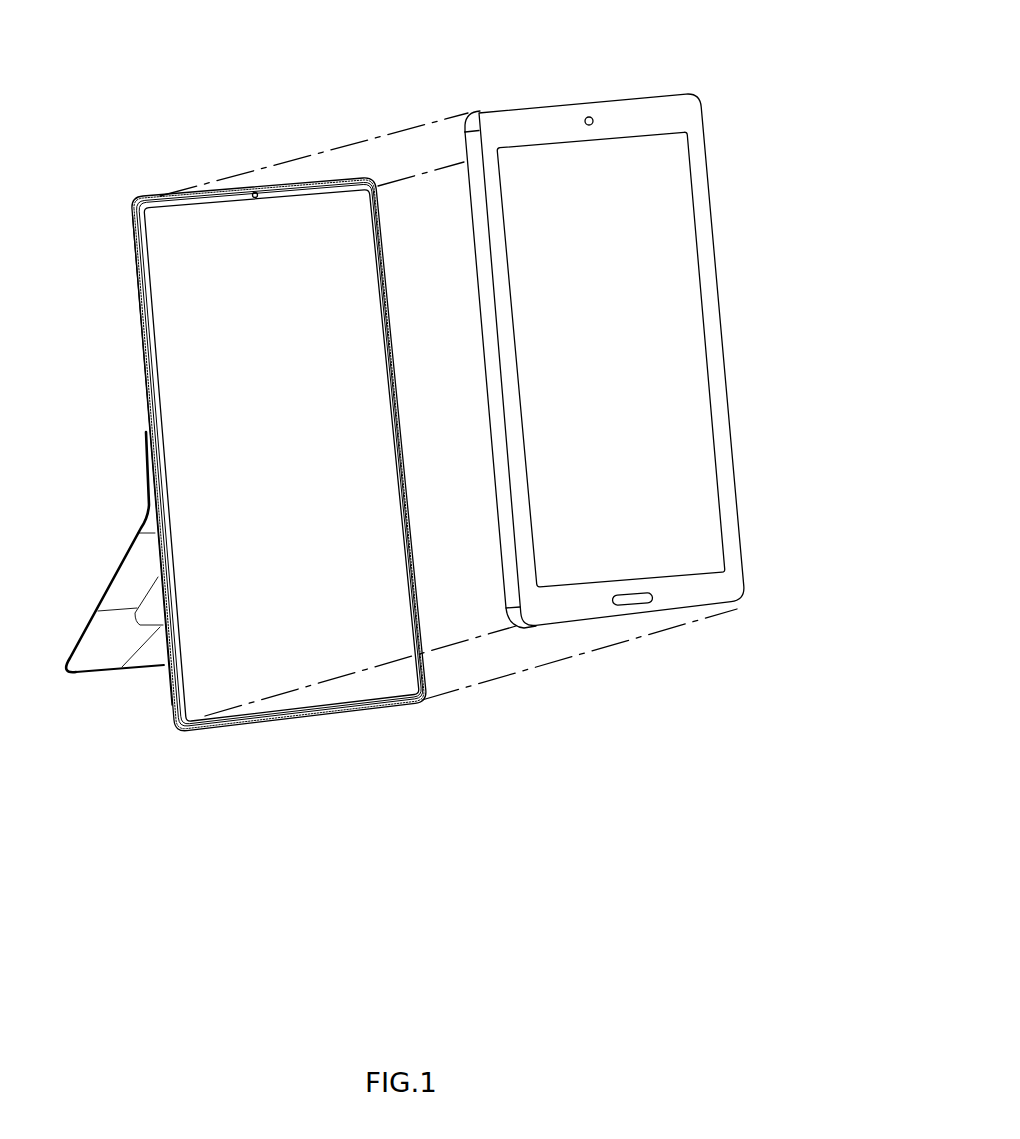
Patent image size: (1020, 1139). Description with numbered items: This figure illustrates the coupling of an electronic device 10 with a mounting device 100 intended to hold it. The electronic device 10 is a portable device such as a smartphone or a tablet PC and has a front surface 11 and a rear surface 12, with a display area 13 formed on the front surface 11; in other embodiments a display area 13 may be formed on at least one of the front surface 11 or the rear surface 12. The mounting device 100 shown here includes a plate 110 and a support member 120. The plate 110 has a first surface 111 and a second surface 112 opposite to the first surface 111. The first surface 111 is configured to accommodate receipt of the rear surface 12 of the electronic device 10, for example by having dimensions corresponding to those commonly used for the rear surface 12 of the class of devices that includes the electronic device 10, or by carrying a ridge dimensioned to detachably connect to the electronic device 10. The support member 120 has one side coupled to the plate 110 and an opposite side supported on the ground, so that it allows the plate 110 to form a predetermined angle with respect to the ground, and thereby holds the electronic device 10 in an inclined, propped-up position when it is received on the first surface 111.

The electronic device 10 is at (596, 319).
The front surface 11 is at (707, 250).
The rear surface 12 is at (468, 218).
The display area 13 is at (678, 366).
The mounting device 100 is at (232, 457).
The plate 110 is at (175, 732).
The first surface 111 is at (212, 222).
The second surface 112 is at (133, 273).
The support member 120 is at (106, 572).